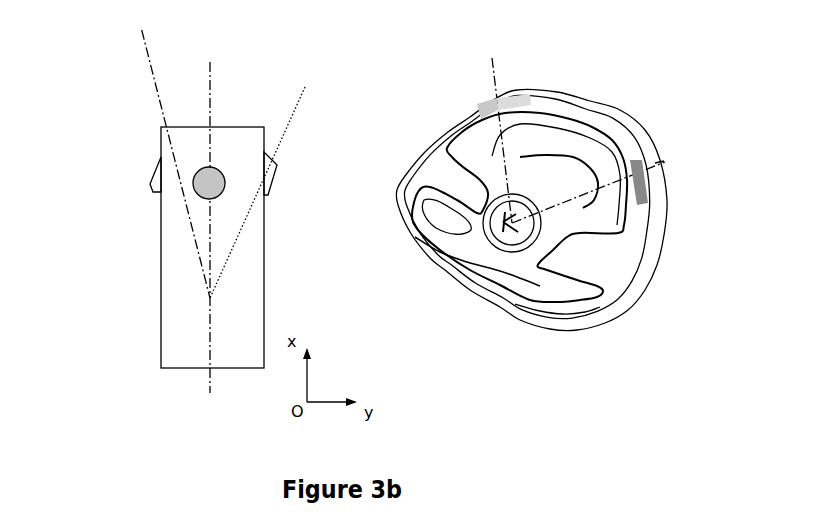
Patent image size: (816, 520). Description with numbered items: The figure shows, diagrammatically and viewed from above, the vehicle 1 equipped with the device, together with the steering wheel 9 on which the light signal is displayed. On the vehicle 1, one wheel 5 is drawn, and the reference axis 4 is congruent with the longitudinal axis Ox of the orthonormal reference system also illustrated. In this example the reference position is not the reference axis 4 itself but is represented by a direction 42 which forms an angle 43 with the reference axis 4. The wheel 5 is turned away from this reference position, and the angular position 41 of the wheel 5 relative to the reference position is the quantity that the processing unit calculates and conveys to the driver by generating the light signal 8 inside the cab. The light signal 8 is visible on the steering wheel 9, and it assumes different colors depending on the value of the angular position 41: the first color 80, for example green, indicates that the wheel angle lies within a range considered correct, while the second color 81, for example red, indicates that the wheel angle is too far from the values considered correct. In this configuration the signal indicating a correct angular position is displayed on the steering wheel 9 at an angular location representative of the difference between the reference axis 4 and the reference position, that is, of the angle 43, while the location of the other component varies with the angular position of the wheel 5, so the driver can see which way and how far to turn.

The vehicle 1 is at (270, 298).
The reference axis 4 is at (207, 380).
The wheel 5 is at (158, 177).
The light signal 8 is at (204, 199).
The steering wheel 9 is at (597, 268).
The angular position 41 is at (303, 85).
The direction 42 is at (193, 240).
The angle 43 is at (210, 110).
The first color 80 is at (481, 104).
The second color 81 is at (643, 190).